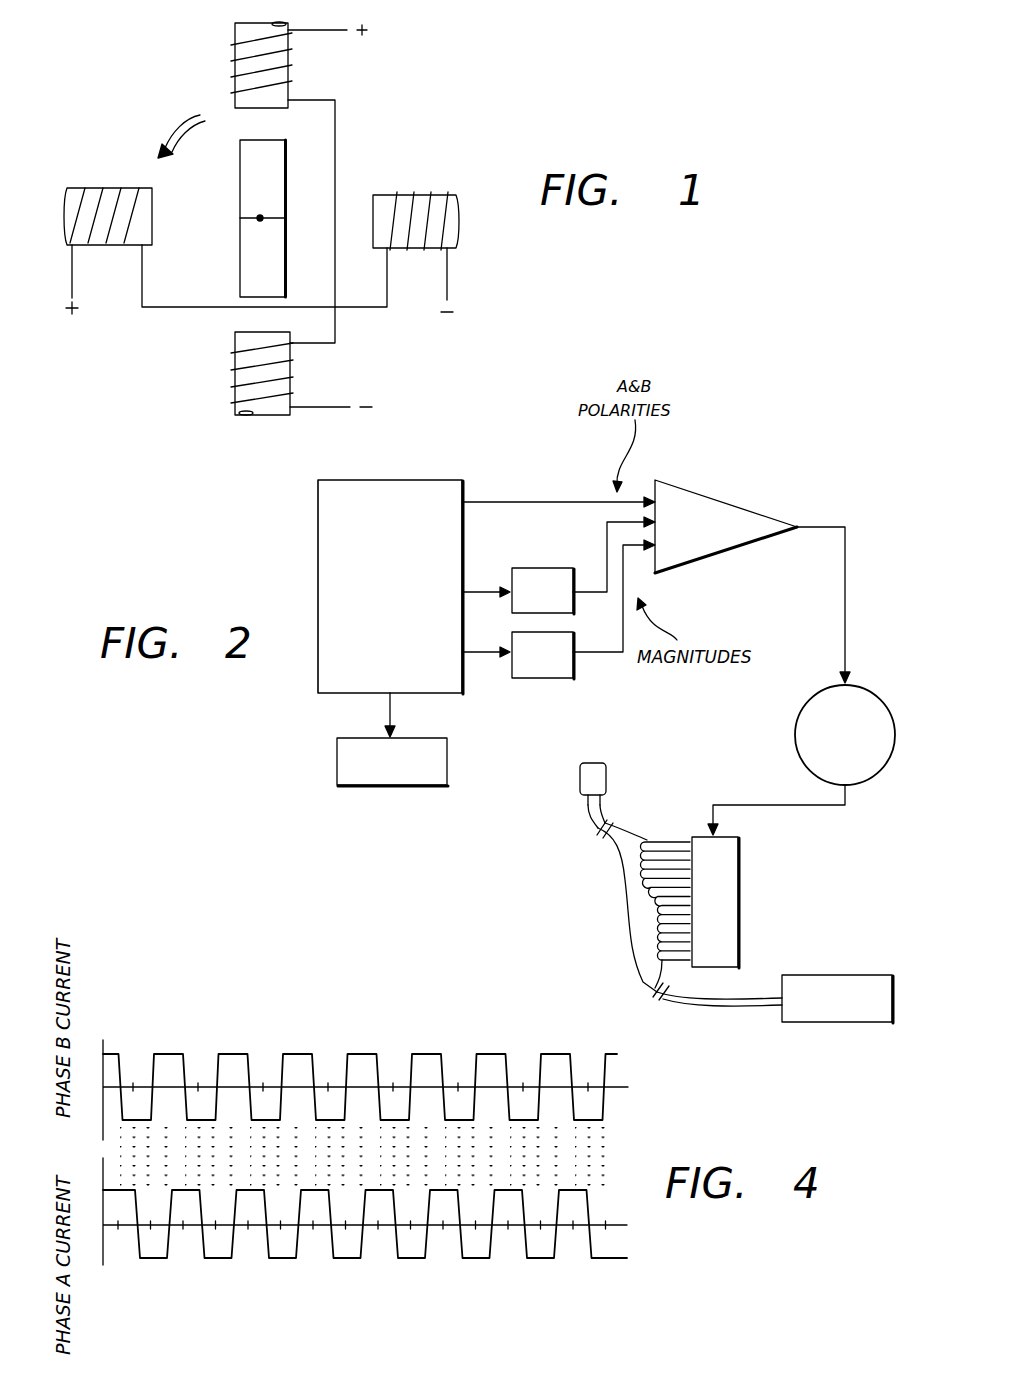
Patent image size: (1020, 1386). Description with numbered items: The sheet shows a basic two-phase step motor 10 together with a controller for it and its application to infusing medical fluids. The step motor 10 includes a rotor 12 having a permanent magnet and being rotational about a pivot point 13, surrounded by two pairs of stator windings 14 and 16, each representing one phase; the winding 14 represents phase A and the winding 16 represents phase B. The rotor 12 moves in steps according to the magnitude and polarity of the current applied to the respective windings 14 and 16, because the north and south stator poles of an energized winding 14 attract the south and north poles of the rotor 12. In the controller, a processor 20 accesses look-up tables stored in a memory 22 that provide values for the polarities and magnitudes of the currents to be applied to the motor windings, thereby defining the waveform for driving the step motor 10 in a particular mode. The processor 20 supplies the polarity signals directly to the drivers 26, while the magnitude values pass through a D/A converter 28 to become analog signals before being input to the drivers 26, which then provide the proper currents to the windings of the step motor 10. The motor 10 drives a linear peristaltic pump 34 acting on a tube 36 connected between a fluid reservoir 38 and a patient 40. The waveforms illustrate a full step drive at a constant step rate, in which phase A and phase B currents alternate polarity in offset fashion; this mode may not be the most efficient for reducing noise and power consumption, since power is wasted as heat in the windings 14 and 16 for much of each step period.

In FIG. 1, the step motor 10 is at (125, 107).
In FIG. 2, the step motor 10 is at (795, 735).
In FIG. 1, the rotor 12 is at (250, 192).
In FIG. 1, the pivot point 13 is at (262, 217).
In FIG. 1, the stator winding 14 is at (335, 130).
In FIG. 1, the stator winding 16 is at (168, 308).
In FIG. 2, the processor 20 is at (318, 515).
In FIG. 2, the memory 22 is at (448, 763).
In FIG. 2, the drivers 26 is at (725, 498).
In FIG. 2, the D/A converter 28 is at (542, 568).
In FIG. 2, the linear peristaltic pump 34 is at (740, 903).
In FIG. 2, the tube 36 is at (628, 933).
In FIG. 2, the fluid reservoir 38 is at (610, 777).
In FIG. 2, the patient 40 is at (833, 975).